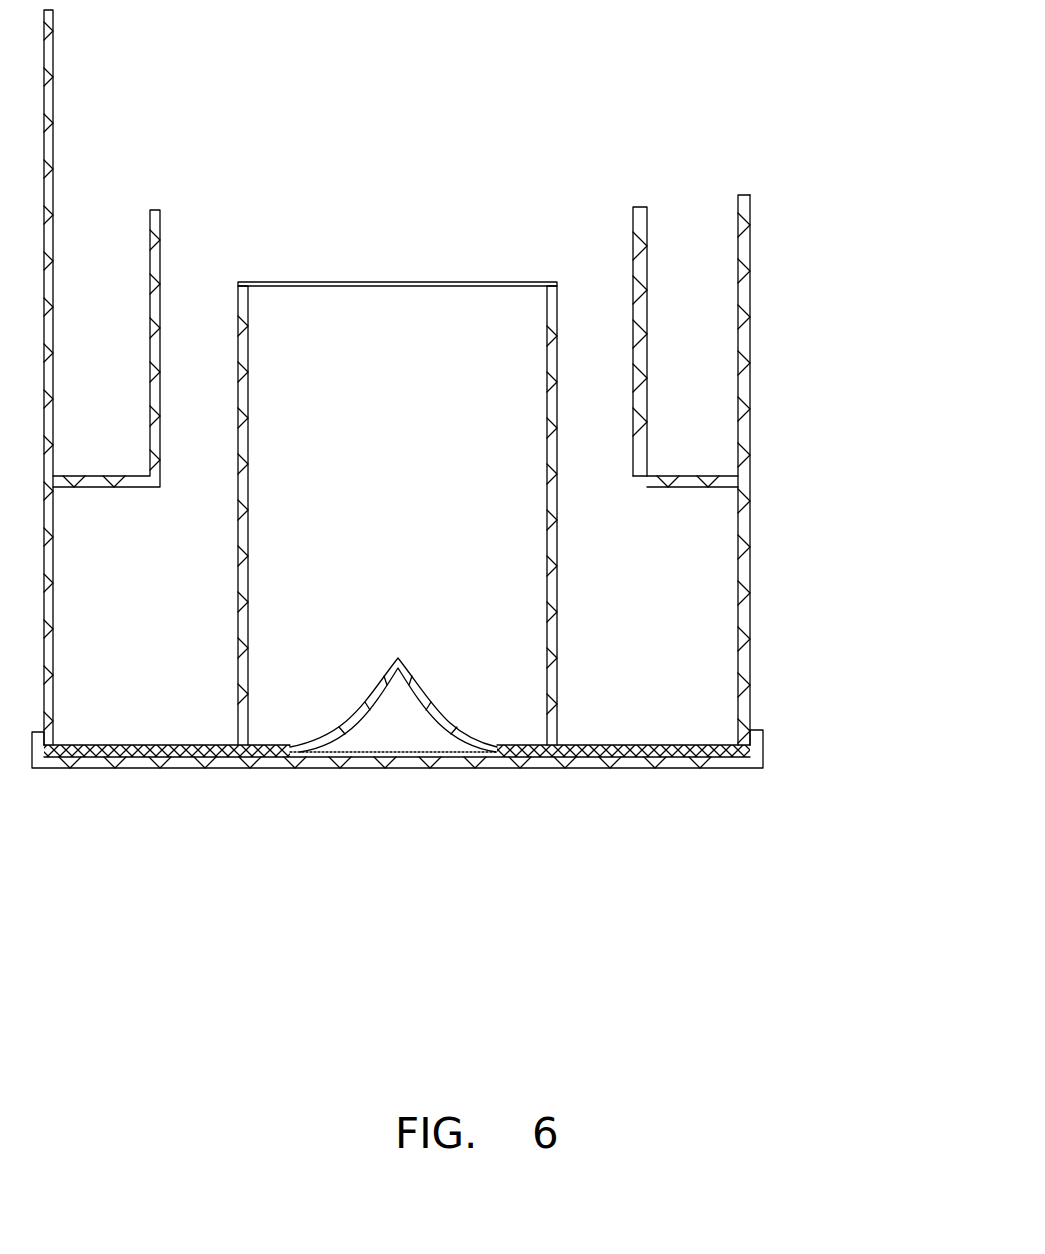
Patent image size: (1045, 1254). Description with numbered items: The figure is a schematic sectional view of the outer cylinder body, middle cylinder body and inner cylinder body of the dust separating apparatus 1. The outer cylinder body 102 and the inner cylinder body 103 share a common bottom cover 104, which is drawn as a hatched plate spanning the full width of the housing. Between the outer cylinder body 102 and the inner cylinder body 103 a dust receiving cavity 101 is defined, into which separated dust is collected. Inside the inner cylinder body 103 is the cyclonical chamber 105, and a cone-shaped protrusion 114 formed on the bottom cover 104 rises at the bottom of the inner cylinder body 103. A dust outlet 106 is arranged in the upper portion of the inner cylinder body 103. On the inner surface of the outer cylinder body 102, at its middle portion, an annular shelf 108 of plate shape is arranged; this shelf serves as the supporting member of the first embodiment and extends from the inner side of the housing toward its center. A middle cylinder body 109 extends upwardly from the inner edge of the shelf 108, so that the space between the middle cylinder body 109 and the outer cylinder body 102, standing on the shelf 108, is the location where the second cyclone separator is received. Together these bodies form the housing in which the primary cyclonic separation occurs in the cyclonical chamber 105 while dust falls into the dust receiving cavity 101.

The vaporization device 1 is at (747, 543).
The dust receiving cavity 101 is at (697, 717).
The outer cylinder body 102 is at (747, 607).
The inner cylinder body 103 is at (552, 645).
The bottom cover 104 is at (668, 758).
The cyclonical chamber 105 is at (498, 552).
The dust outlet 106 is at (385, 282).
The annular shelf 108 is at (692, 481).
The middle cylinder body 109 is at (640, 352).
The cone-shaped protrusion 114 is at (432, 698).